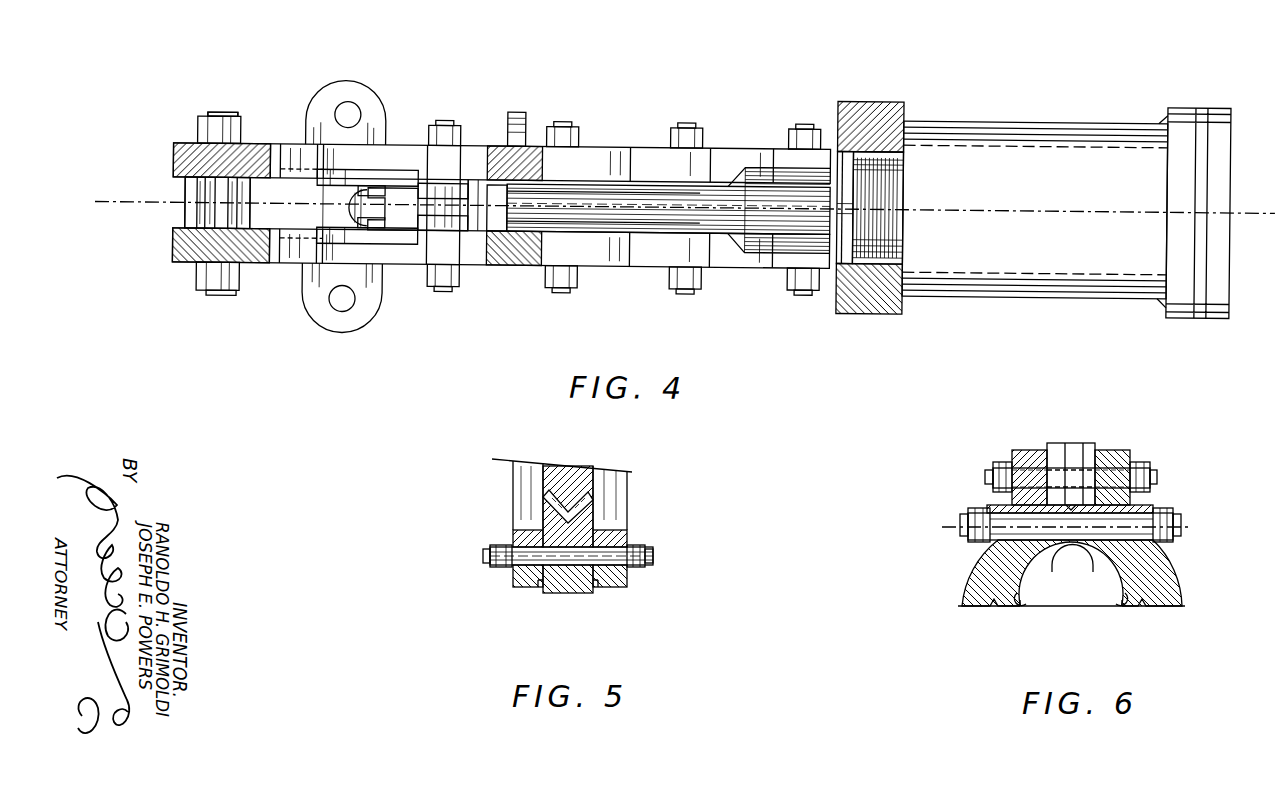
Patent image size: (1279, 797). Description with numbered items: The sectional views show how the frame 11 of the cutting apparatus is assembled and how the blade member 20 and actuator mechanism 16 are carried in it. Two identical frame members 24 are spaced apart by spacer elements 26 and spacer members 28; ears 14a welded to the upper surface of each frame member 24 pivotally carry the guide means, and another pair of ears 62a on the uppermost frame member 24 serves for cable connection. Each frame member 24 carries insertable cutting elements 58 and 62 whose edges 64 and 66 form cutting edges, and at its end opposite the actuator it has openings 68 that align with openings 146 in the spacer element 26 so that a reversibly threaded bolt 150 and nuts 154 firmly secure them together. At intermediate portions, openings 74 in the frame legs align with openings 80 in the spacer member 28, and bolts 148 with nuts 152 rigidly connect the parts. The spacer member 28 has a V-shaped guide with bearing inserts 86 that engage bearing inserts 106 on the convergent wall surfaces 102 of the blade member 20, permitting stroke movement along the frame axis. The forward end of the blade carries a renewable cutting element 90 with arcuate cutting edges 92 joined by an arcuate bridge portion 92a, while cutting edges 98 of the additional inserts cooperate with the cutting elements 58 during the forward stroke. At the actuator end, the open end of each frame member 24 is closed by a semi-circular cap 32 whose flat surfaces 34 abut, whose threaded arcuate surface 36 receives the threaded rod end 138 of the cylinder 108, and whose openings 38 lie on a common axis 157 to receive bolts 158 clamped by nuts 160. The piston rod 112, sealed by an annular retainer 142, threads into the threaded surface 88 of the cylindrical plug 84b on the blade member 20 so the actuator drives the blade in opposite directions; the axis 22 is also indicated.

In FIG. 4, the frame 11 is at (609, 290).
In FIG. 4, the ears 14a is at (365, 92).
In FIG. 4, the actuator mechanism 16 is at (1085, 155).
In FIG. 4, the blade member 20 is at (506, 222).
In FIG. 5, the blade member 20 is at (578, 470).
In FIG. 4, the axis 22 is at (1048, 212).
In FIG. 4, the frame member 24 is at (290, 144).
In FIG. 5, the frame member 24 is at (528, 590).
In FIG. 6, the frame member 24 is at (1032, 452).
In FIG. 4, the spacer element 26 is at (190, 205).
In FIG. 5, the spacer member 28 is at (575, 594).
In FIG. 6, the spacer member 28 is at (1071, 445).
In FIG. 4, the cap 32 is at (882, 306).
In FIG. 6, the cap 32 is at (985, 575).
In FIG. 6, the flat surfaces 34 is at (1054, 548).
In FIG. 6, the arcuate surface 36 is at (1028, 606).
In FIG. 6, the openings 38 is at (1070, 597).
In FIG. 4, the cutting elements 58 is at (373, 168).
In FIG. 4, the cutting element 62 is at (320, 140).
In FIG. 4, the ears 62a is at (517, 107).
In FIG. 4, the cutting edge 64 is at (367, 205).
In FIG. 4, the cutting edge 66 is at (356, 188).
In FIG. 4, the openings 68 is at (205, 146).
In FIG. 5, the circular openings 74 is at (530, 578).
In FIG. 5, the openings 80 is at (545, 533).
In FIG. 4, the cylindrical plug 84b is at (768, 244).
In FIG. 5, the bearing insert 86 is at (548, 505).
In FIG. 4, the internal cylindrical surface 88 is at (880, 306).
In FIG. 4, the renewable cutting element 90 is at (320, 232).
In FIG. 4, the cutting edges 92 is at (352, 200).
In FIG. 4, the arcuate bridge portion 92a is at (393, 208).
In FIG. 4, the cutting edges 98 is at (466, 176).
In FIG. 4, the convergent wall surfaces 102 is at (645, 197).
In FIG. 4, the bearing inserts 106 is at (700, 197).
In FIG. 5, the bearing inserts 106 is at (565, 492).
In FIG. 4, the cylinder 108 is at (1067, 280).
In FIG. 4, the piston rod 112 is at (845, 215).
In FIG. 4, the threaded rod end 138 is at (890, 183).
In FIG. 4, the annular retainer 142 is at (893, 140).
In FIG. 4, the openings 146 is at (190, 190).
In FIG. 4, the bolt 148 is at (432, 125).
In FIG. 5, the bolt 148 is at (668, 550).
In FIG. 6, the bolt 148 is at (1152, 470).
In FIG. 4, the bolt 150 is at (217, 110).
In FIG. 4, the nuts 152 is at (452, 143).
In FIG. 5, the nuts 152 is at (500, 558).
In FIG. 6, the nuts 152 is at (1002, 461).
In FIG. 4, the nuts 154 is at (238, 138).
In FIG. 6, the common axis 157 is at (1182, 527).
In FIG. 6, the bolts 158 is at (1003, 530).
In FIG. 6, the nuts 160 is at (976, 508).